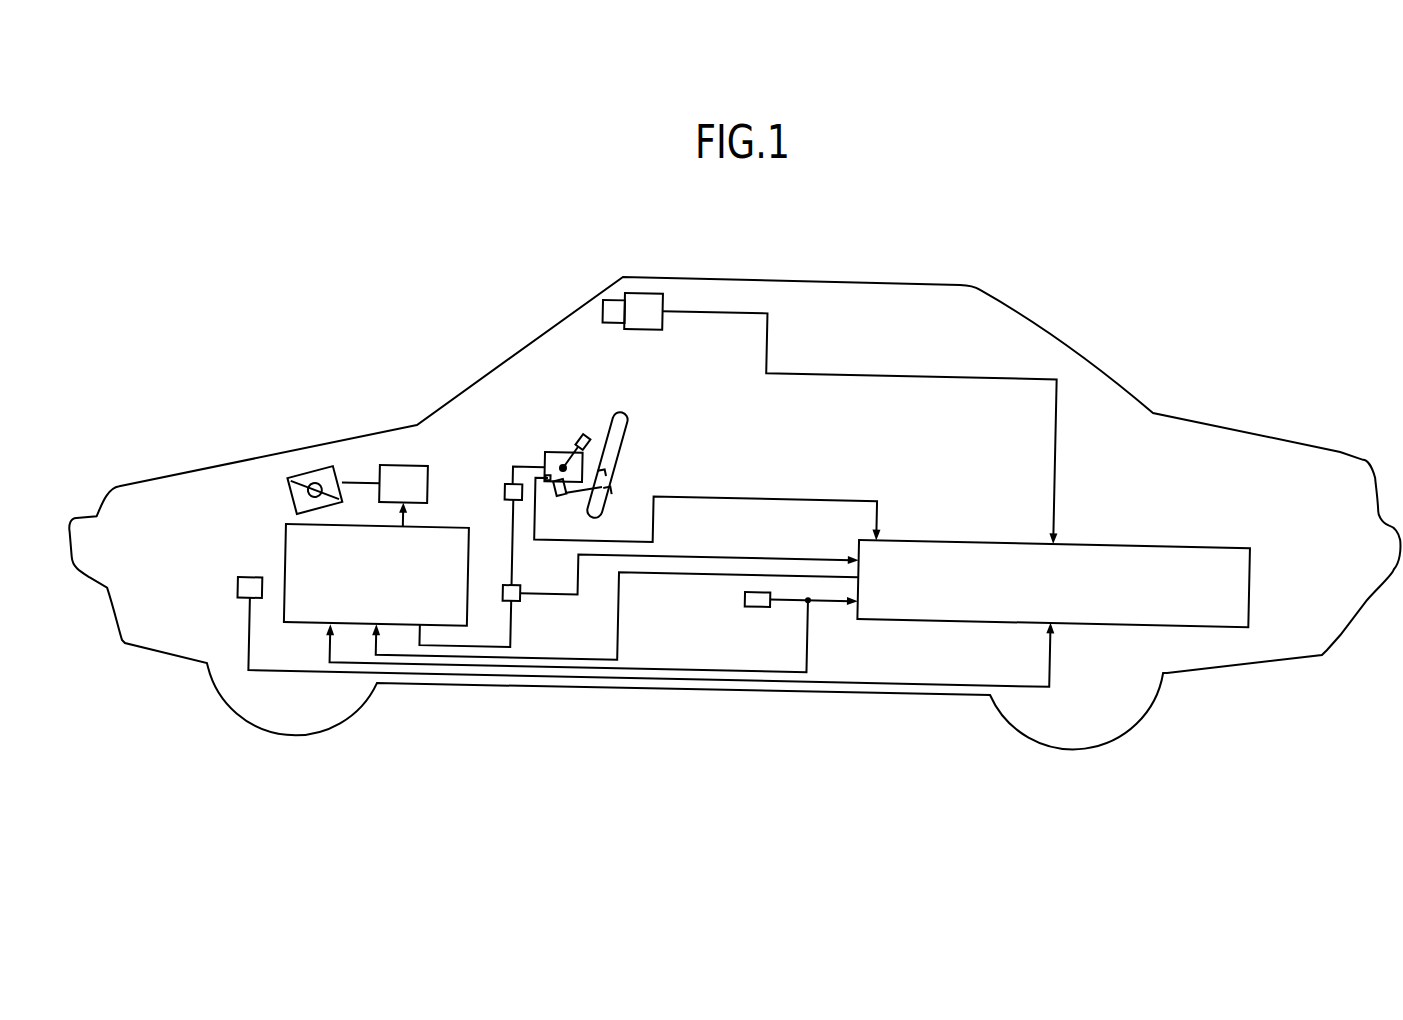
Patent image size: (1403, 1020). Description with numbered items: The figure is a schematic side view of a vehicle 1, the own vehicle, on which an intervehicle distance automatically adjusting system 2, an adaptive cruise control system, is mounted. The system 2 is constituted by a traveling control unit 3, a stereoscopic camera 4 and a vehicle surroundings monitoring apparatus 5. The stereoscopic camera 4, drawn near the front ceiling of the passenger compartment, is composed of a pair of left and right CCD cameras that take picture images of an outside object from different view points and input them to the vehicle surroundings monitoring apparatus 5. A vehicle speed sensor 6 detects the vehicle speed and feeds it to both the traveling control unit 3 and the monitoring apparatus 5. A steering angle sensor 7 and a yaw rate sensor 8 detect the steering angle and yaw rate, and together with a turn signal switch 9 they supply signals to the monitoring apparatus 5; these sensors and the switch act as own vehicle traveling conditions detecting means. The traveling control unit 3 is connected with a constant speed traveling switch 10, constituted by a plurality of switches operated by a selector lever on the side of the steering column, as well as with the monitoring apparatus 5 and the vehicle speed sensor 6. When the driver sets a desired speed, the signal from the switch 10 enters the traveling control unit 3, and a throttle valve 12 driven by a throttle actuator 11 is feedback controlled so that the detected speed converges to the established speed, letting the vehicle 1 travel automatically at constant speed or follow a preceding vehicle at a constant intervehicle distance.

The vehicle 1 is at (1081, 354).
The intervehicle distance automatically adjusting system 2 is at (915, 295).
The traveling control unit 3 is at (452, 529).
The stereoscopic camera 4 is at (635, 294).
The vehicle surroundings monitoring apparatus 5 is at (1135, 538).
The vehicle speed sensor 6 is at (759, 607).
The steering angle sensor 7 is at (521, 607).
The yaw rate sensor 8 is at (239, 597).
The turn signal switch 9 is at (566, 501).
The constant speed traveling switch 10 is at (560, 455).
The throttle actuator 11 is at (388, 472).
The throttle valve 12 is at (308, 485).